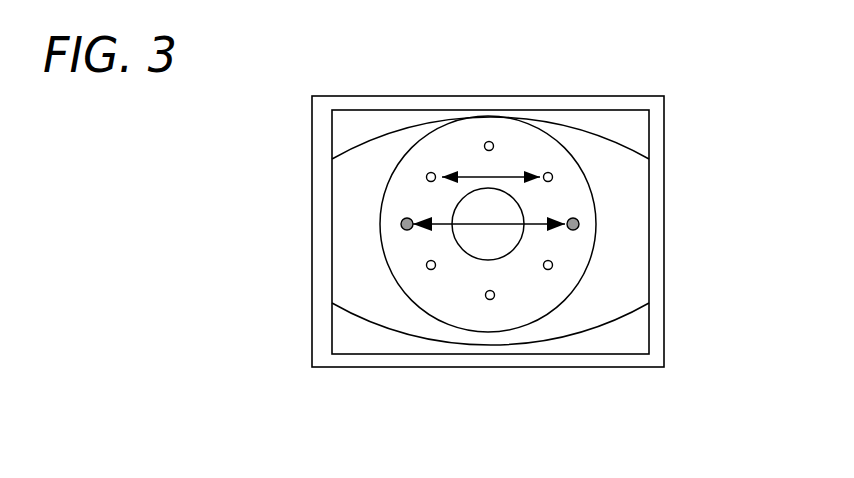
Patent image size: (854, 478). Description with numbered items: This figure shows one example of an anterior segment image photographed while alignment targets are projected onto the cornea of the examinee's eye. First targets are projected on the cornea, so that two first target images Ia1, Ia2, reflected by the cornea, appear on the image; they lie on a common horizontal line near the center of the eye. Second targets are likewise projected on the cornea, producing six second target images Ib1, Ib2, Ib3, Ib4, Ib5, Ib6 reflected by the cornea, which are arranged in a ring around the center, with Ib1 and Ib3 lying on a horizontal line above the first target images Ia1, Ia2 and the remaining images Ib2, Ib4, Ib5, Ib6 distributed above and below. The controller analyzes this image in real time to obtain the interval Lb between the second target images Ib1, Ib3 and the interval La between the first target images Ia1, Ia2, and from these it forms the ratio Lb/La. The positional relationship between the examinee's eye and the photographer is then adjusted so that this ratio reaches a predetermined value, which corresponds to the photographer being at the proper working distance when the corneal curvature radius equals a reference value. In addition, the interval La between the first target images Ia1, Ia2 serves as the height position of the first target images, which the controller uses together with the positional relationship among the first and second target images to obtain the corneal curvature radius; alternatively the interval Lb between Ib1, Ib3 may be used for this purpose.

The first target image Ia1 is at (400, 224).
The first target image Ia2 is at (580, 224).
The second target image Ib1 is at (427, 178).
The second target image Ib2 is at (485, 144).
The second target image Ib3 is at (552, 178).
The second target image Ib4 is at (552, 269).
The second target image Ib5 is at (494, 300).
The second target image Ib6 is at (428, 269).
The interval between first target images La is at (483, 228).
The interval between second target images Lb is at (509, 176).